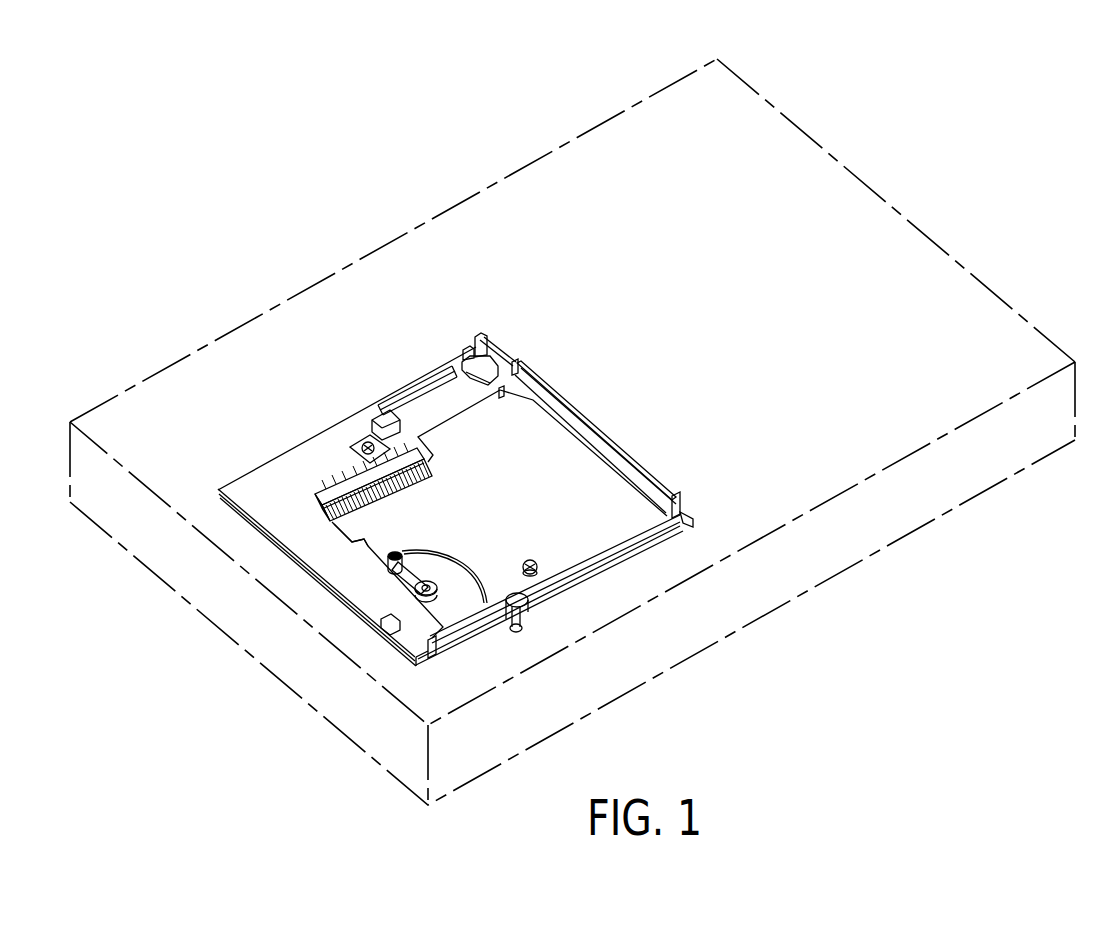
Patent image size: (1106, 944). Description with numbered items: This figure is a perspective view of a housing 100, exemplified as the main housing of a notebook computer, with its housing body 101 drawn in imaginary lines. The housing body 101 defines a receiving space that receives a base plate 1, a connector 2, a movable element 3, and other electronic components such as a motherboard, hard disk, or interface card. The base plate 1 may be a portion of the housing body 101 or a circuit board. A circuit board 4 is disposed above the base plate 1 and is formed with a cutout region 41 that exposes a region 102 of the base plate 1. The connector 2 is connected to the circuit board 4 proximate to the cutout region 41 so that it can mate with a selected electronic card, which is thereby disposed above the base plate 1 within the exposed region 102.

The housing 100 is at (888, 184).
The housing body 101 is at (972, 271).
The region of the base plate 102 is at (550, 540).
The base plate 1 is at (410, 659).
The connector 2 is at (342, 483).
The movable element 3 is at (398, 553).
The circuit board 4 is at (270, 488).
The cutout region 41 is at (364, 543).